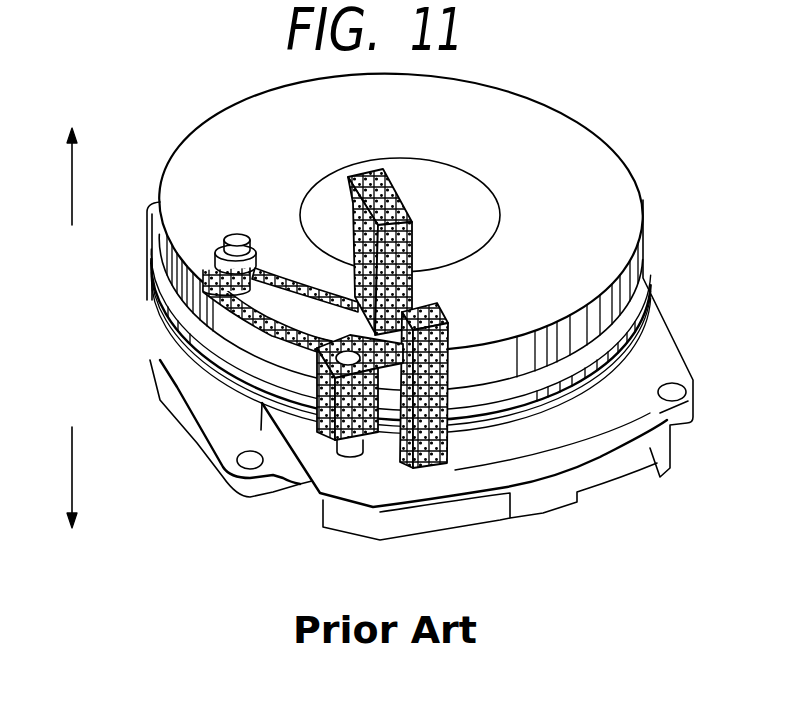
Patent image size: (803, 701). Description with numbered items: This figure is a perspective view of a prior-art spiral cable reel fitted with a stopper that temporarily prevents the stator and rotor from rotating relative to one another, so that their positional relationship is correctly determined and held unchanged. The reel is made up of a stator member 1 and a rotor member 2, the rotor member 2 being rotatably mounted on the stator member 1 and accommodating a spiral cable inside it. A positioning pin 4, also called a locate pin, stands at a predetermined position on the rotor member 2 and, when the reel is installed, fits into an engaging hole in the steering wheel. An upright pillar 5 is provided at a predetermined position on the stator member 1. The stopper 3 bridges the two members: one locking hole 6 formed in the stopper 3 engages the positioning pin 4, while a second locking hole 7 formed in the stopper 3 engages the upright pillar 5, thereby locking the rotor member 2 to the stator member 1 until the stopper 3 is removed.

The stator member 1 is at (662, 340).
The rotor member 2 is at (567, 148).
The stopper 3 is at (410, 233).
The positioning pin 4 is at (220, 255).
The upright pillar 5 is at (350, 455).
The locking hole 6 is at (150, 301).
The locking hole 7 is at (363, 410).